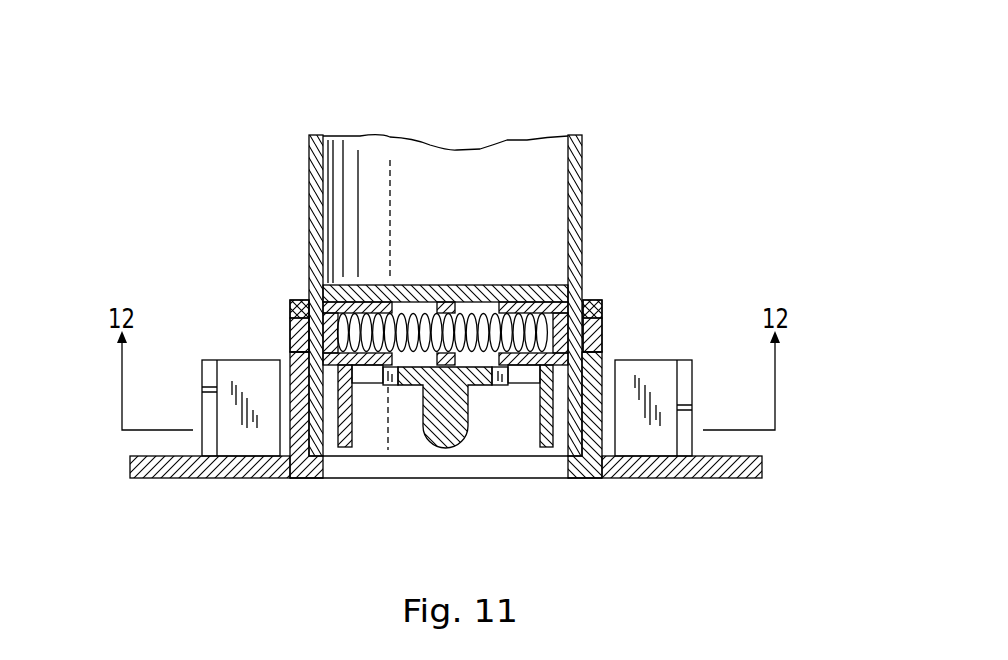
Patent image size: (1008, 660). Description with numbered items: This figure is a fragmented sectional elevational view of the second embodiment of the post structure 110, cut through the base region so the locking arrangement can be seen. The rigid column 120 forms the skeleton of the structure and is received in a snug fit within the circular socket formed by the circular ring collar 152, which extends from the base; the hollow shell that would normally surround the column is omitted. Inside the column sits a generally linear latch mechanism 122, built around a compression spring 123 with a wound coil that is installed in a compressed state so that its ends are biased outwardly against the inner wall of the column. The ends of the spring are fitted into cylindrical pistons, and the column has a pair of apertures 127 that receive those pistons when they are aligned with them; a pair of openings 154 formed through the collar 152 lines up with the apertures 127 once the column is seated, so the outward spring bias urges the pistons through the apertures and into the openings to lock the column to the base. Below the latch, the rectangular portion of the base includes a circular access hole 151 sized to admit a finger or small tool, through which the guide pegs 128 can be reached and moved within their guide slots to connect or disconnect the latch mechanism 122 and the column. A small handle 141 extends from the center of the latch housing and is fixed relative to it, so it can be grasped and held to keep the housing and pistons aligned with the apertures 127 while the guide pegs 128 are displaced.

The post structure 110 is at (295, 68).
The rigid column 120 is at (313, 163).
The latch mechanism 122 is at (470, 278).
The compression spring 123 is at (327, 268).
The apertures 127 is at (317, 345).
The guide pegs 128 is at (358, 440).
The handle 141 is at (453, 440).
The access hole 151 is at (342, 478).
The circular ring collar 152 is at (592, 300).
The openings 154 is at (291, 302).